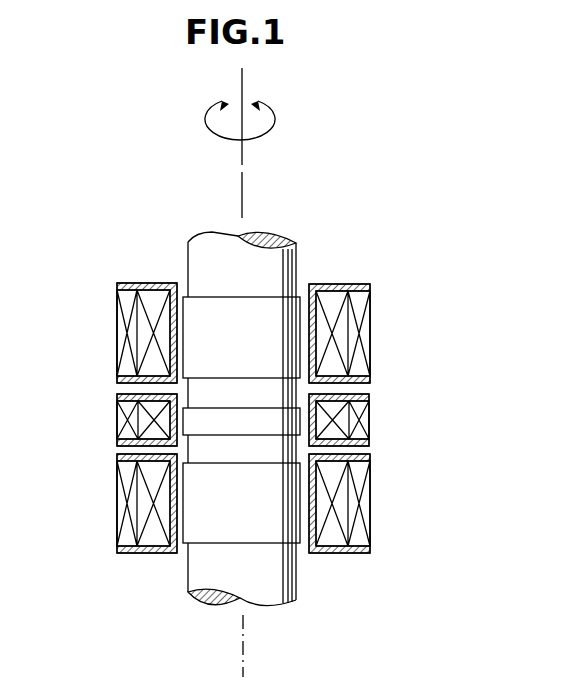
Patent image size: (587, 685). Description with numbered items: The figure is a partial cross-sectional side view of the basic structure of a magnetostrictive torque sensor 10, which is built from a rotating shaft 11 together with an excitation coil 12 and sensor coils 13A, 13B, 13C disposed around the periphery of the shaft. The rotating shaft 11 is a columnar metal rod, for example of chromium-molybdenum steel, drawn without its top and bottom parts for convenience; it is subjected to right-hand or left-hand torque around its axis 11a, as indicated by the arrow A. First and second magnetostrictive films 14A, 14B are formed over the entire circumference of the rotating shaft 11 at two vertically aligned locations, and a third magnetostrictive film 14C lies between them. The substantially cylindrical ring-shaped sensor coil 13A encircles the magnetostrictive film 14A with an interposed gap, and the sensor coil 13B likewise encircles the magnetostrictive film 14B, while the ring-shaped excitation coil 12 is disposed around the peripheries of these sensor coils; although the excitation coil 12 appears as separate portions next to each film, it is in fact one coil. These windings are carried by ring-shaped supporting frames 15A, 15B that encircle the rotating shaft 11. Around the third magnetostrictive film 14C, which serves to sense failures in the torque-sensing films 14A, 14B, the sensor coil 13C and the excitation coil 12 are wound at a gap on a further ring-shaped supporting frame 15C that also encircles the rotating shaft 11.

The magnetostrictive torque sensor 10 is at (368, 210).
The rotating shaft 11 is at (296, 256).
The axis 11a is at (243, 77).
The arrow A is at (276, 118).
The excitation coil 12 is at (365, 338).
The sensor coil 13A is at (347, 297).
The sensor coil 13B is at (346, 536).
The sensor coil 13C is at (365, 440).
The first magnetostrictive film 14A is at (272, 308).
The second magnetostrictive film 14B is at (273, 538).
The third magnetostrictive film 14C is at (273, 418).
The supporting frame 15A is at (146, 283).
The supporting frame 15B is at (146, 553).
The supporting frame 15C is at (117, 393).